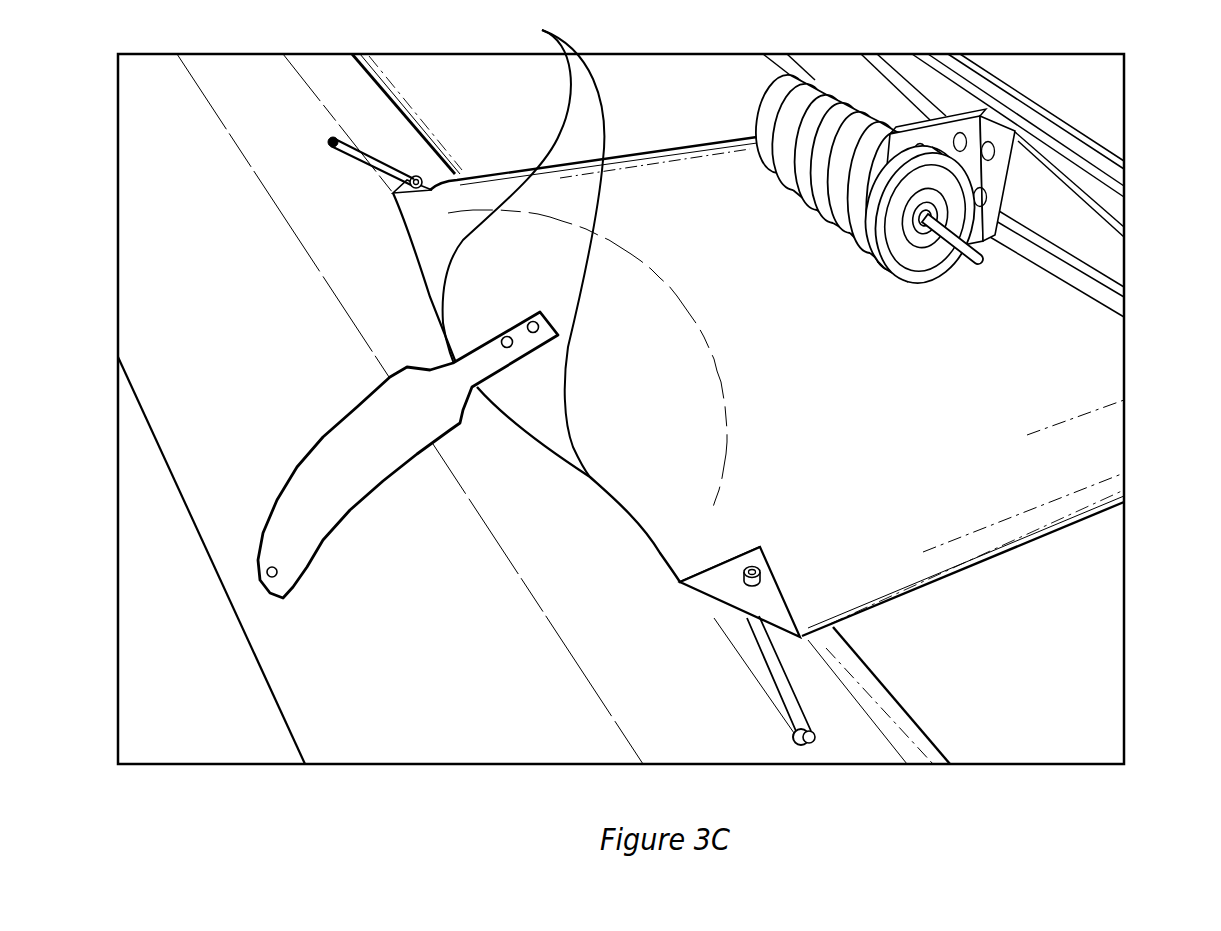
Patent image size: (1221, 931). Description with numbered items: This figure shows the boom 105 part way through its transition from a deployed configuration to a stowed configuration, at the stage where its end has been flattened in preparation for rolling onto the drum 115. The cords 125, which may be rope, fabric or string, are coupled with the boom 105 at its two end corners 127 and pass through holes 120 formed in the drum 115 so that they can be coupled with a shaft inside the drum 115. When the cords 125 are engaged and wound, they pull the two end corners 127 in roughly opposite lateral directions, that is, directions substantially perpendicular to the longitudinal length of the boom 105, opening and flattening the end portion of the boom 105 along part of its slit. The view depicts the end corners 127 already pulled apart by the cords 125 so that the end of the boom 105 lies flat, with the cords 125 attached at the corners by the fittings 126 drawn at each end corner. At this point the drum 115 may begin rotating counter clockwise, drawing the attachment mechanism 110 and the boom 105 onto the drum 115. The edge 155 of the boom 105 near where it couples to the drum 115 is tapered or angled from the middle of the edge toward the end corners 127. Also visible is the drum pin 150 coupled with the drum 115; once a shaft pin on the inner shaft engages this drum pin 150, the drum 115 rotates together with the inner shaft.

The boom 105 is at (1040, 483).
The attachment mechanism 110 is at (350, 449).
The drum 115 is at (368, 750).
The holes 120 is at (813, 740).
The cords 125 is at (358, 153).
The pin 126 is at (410, 182).
The end corners 127 is at (730, 593).
The drum pin 150 is at (778, 115).
The edge 155 is at (556, 300).